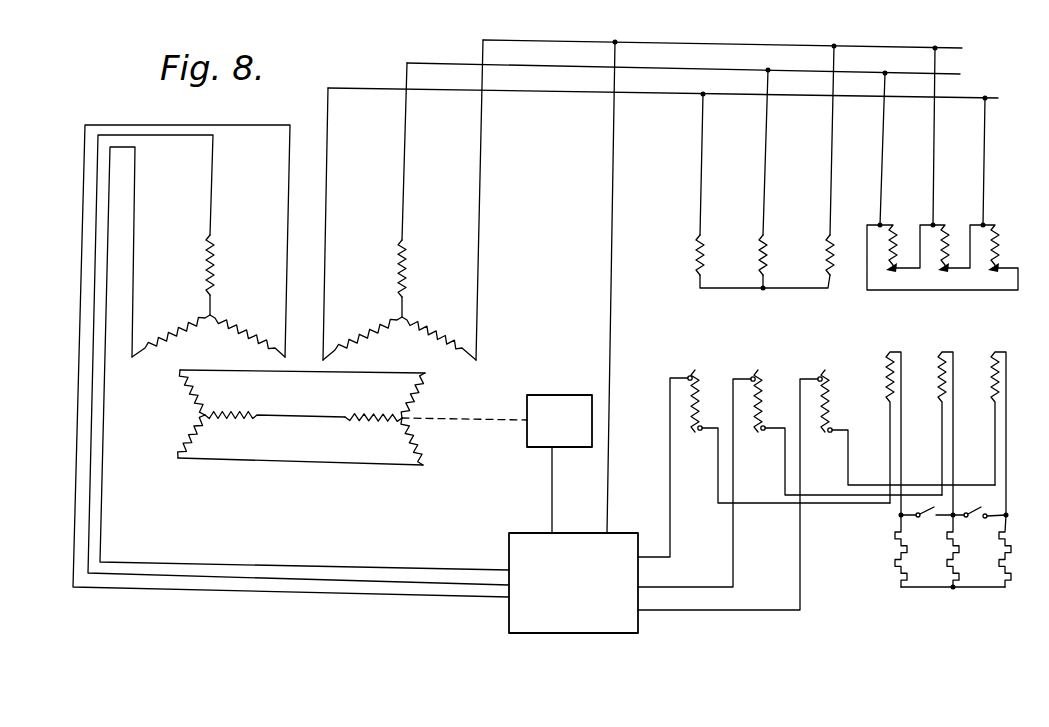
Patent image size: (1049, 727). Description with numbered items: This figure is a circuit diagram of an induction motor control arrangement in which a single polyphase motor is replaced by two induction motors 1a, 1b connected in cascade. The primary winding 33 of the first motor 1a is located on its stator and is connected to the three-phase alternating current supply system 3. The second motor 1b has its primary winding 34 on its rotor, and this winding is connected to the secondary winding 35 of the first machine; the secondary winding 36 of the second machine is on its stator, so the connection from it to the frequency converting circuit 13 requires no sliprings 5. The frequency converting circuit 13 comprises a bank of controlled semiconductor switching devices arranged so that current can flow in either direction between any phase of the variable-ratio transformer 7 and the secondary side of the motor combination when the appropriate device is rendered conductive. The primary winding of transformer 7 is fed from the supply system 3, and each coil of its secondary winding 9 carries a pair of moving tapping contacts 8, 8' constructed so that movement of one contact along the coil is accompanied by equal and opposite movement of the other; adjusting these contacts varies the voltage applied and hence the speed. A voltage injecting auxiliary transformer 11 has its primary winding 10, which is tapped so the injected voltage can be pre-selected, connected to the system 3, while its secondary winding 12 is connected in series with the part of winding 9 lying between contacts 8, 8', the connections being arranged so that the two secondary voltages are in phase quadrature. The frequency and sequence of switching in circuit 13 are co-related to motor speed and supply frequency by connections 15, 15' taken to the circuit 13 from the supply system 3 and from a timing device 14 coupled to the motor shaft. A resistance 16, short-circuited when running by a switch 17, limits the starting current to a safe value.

The induction motor 1a is at (408, 362).
The induction motor 1b is at (217, 360).
The 3-phase supply system 3 is at (663, 70).
The sliprings 5 is at (765, 160).
The variable-ratio transformer 7 is at (765, 300).
The moving tapping contact 8 is at (790, 471).
The moving tapping contact 8' is at (816, 490).
The secondary winding 9 is at (764, 463).
The primary winding 10 is at (932, 138).
The voltage injecting auxiliary transformer 11 is at (942, 278).
The secondary winding 12 is at (946, 433).
The frequency converting circuit 13 is at (573, 583).
The timing device 14 is at (497, 421).
The connections 15 is at (597, 287).
The control connection 15' is at (571, 490).
The resistance 16 is at (953, 552).
The switch 17 is at (954, 487).
The primary winding 33 is at (420, 268).
The primary winding 34 is at (293, 417).
The secondary winding 35 is at (385, 419).
The secondary winding 36 is at (190, 267).